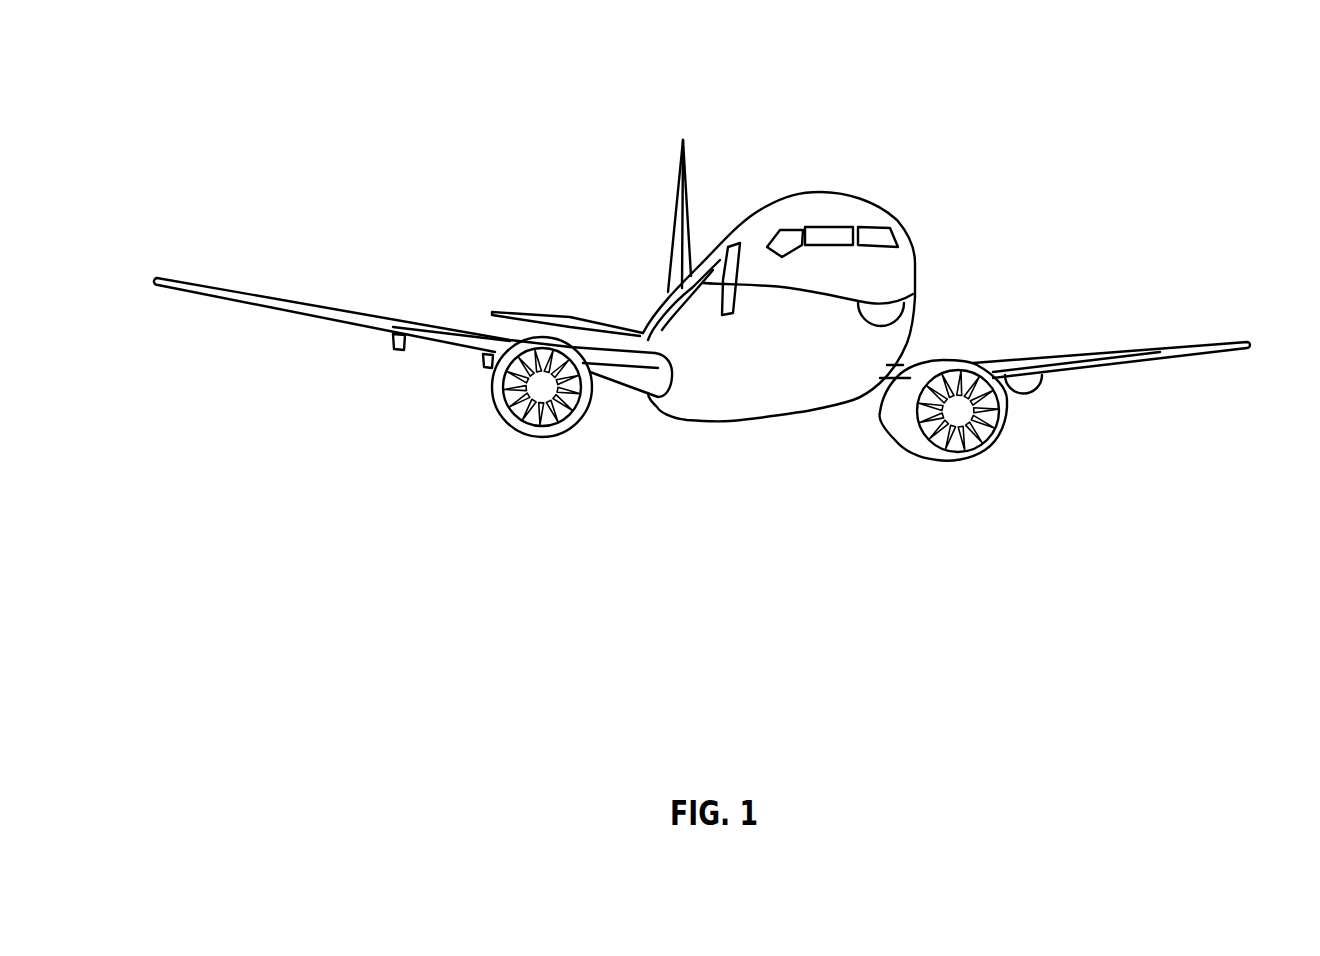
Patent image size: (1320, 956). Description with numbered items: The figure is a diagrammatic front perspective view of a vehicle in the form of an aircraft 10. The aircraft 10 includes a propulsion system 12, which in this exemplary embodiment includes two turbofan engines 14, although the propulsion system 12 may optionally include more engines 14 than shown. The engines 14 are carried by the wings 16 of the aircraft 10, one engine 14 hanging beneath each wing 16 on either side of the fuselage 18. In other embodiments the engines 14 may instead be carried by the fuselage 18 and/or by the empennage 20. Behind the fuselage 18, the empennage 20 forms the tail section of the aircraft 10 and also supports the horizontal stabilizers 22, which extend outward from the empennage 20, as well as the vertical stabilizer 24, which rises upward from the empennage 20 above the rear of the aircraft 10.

The aircraft 10 is at (424, 76).
The propulsion system 12 is at (1055, 453).
The turbofan engines 14 is at (540, 437).
The wings 16 is at (303, 302).
The fuselage 18 is at (918, 262).
The empennage 20 is at (670, 293).
The horizontal stabilizers 22 is at (532, 318).
The vertical stabilizer 24 is at (678, 180).